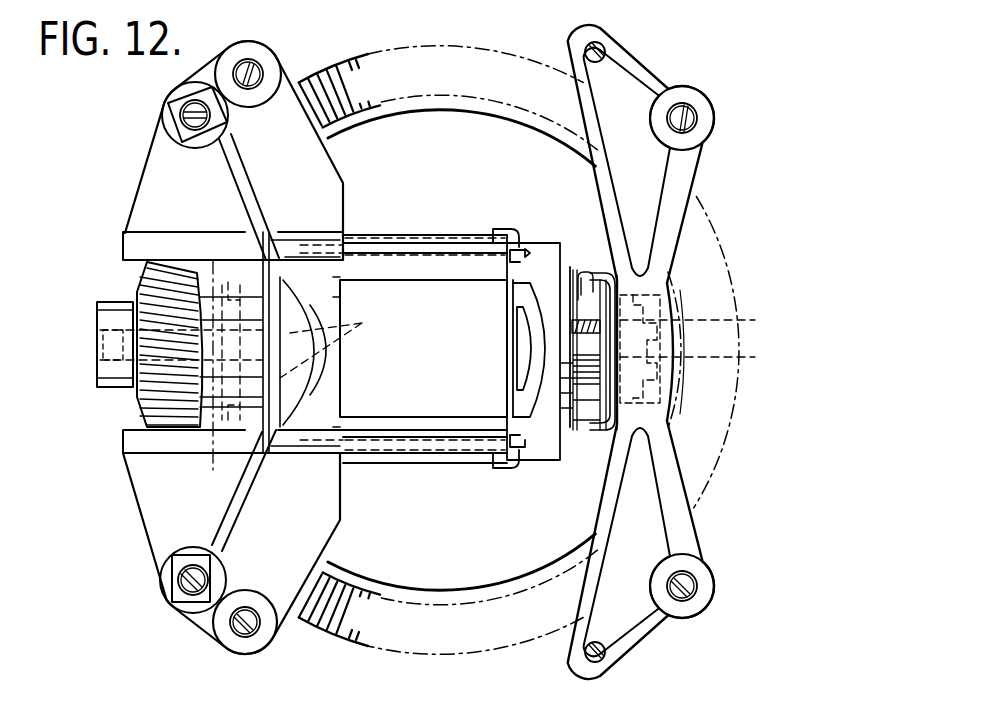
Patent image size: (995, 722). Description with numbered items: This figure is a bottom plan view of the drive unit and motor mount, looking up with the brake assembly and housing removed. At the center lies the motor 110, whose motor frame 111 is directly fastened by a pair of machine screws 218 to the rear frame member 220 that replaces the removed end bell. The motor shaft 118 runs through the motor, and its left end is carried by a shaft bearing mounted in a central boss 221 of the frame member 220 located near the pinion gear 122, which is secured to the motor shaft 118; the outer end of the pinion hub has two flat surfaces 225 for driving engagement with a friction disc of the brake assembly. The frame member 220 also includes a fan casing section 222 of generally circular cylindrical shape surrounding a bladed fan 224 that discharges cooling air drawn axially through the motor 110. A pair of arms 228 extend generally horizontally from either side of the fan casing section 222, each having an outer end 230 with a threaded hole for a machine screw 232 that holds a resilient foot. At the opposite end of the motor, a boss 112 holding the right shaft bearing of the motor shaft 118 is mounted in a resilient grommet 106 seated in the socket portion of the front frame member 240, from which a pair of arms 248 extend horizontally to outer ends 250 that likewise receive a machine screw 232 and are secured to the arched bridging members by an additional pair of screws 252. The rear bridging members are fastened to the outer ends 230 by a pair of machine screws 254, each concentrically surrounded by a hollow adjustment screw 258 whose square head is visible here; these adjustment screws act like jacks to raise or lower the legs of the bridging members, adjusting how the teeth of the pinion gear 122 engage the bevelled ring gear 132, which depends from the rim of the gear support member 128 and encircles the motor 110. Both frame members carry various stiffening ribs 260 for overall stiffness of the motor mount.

The resilient grommet 106 is at (665, 293).
The motor 110 is at (445, 370).
The motor frame 111 is at (426, 236).
The boss 112 is at (715, 318).
The motor shaft 118 is at (108, 352).
The pinion gear 122 is at (145, 290).
The gear support member 128 is at (450, 550).
The ring gear 132 is at (150, 412).
The machine screws 218 is at (466, 240).
The frame member 220 is at (365, 350).
The central boss 221 is at (215, 440).
The fan casing section 222 is at (243, 232).
The bladed fan 224 is at (347, 343).
The flat surfaces 225 is at (112, 322).
The arms 228 is at (156, 138).
The outer end 230 is at (257, 43).
The machine screw 232 is at (262, 66).
The front frame member 240 is at (674, 405).
The arms 248 is at (681, 355).
The outer end 250 is at (702, 98).
The screws 252 is at (606, 54).
The machine screws 254 is at (180, 115).
The adjustment screw 258 is at (175, 90).
The stiffening ribs 260 is at (244, 186).